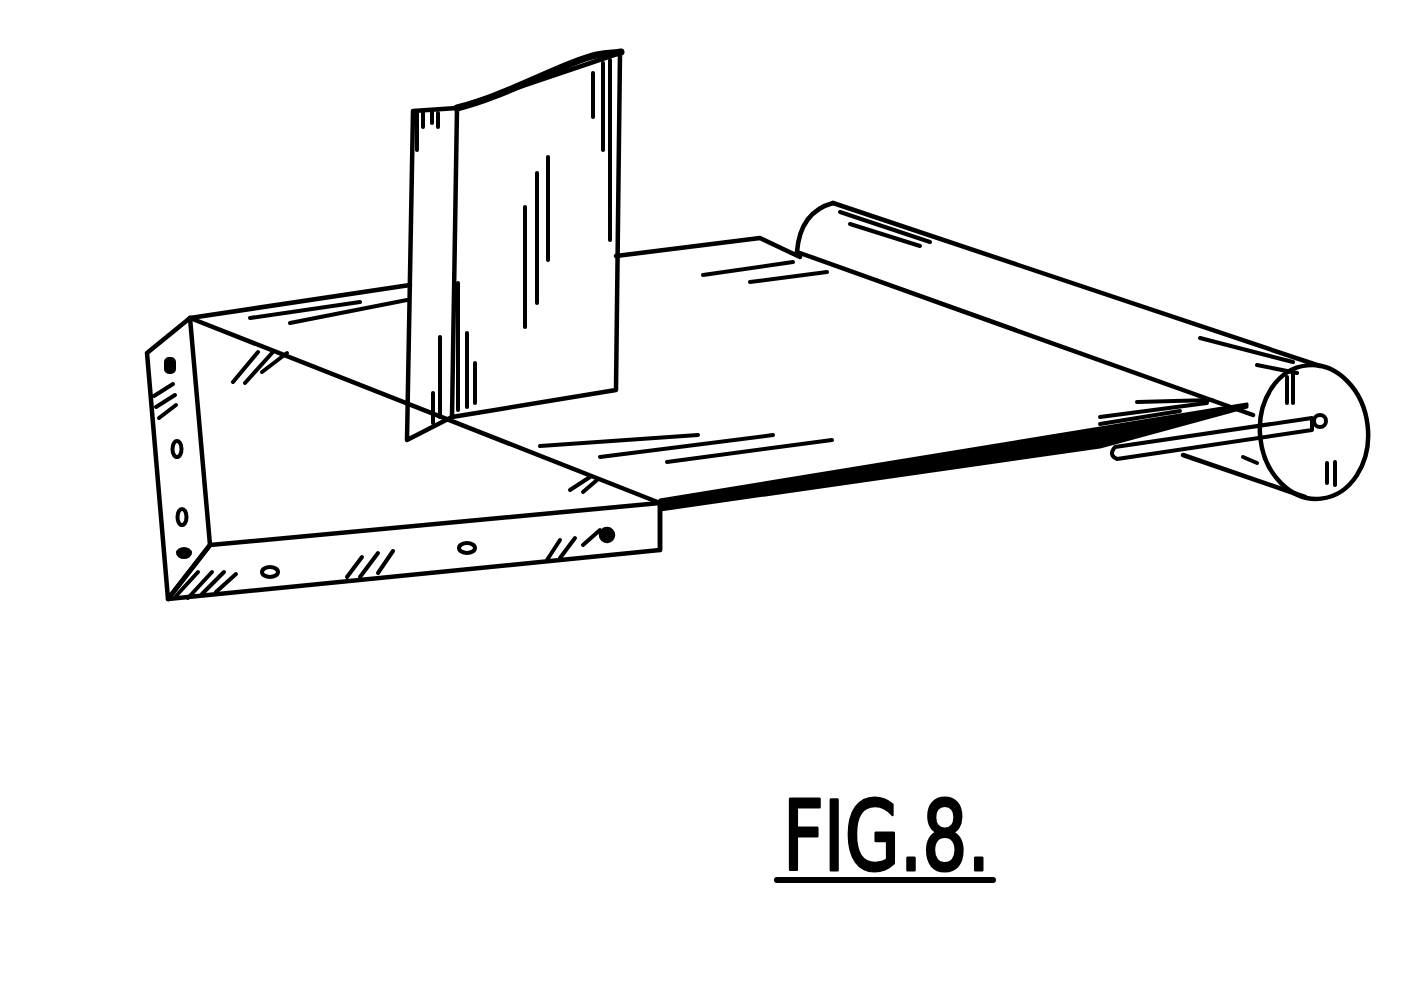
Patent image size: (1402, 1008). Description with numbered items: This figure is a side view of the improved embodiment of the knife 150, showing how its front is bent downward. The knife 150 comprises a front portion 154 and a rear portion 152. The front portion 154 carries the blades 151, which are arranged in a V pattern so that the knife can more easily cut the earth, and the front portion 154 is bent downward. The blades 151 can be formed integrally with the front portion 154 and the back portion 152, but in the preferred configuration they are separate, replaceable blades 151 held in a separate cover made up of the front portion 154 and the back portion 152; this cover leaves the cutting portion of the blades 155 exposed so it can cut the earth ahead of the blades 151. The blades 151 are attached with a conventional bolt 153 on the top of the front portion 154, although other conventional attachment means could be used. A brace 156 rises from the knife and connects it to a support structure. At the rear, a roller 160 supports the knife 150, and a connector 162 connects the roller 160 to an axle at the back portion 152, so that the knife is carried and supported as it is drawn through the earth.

The knife 150 is at (935, 125).
The blades 151 is at (423, 557).
The rear portion 152 is at (947, 388).
The bolt 153 is at (617, 543).
The front portion 154 is at (327, 492).
The cutting portion of the blades 155 is at (255, 593).
The brace 156 is at (622, 137).
The roller 160 is at (1162, 333).
The connector 162 is at (1223, 440).